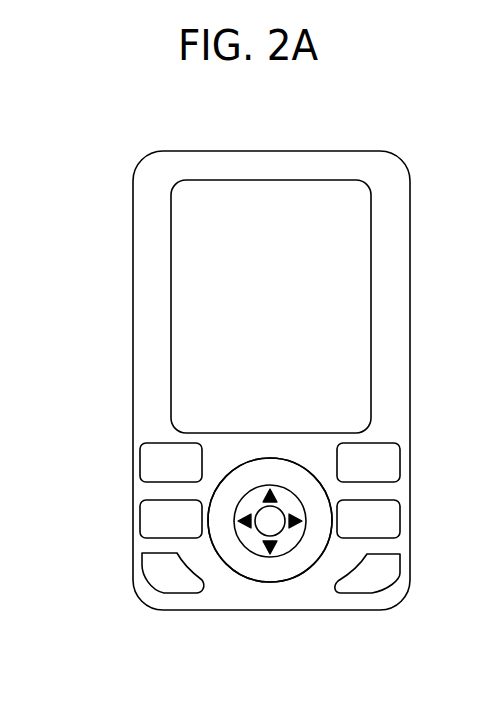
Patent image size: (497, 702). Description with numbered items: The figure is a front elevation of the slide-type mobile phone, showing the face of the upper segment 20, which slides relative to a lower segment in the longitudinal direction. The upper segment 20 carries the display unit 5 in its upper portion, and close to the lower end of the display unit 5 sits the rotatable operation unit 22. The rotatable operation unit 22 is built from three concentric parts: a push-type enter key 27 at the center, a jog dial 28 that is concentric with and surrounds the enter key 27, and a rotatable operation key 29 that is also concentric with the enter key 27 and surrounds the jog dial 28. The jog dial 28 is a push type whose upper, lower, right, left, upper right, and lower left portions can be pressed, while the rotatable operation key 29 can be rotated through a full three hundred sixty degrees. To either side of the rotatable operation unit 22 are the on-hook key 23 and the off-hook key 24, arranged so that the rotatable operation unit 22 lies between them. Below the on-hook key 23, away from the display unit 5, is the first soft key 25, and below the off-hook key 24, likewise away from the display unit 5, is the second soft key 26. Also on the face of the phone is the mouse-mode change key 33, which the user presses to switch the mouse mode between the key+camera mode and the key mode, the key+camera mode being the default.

The display unit 5 is at (230, 195).
The upper segment 20 is at (140, 285).
The rotatable operation unit 22 is at (263, 440).
The on-hook key 23 is at (153, 522).
The off-hook key 24 is at (384, 520).
The first soft key 25 is at (158, 575).
The second soft key 26 is at (375, 577).
The enter key 27 is at (277, 540).
The jog dial 28 is at (293, 473).
The rotatable operation key 29 is at (253, 563).
The mouse-mode change key 33 is at (383, 462).